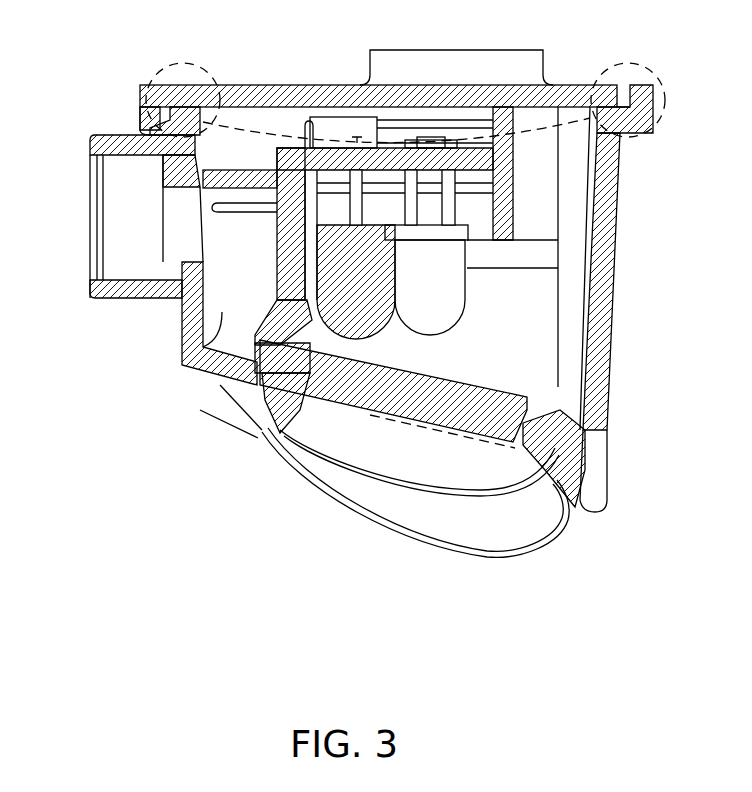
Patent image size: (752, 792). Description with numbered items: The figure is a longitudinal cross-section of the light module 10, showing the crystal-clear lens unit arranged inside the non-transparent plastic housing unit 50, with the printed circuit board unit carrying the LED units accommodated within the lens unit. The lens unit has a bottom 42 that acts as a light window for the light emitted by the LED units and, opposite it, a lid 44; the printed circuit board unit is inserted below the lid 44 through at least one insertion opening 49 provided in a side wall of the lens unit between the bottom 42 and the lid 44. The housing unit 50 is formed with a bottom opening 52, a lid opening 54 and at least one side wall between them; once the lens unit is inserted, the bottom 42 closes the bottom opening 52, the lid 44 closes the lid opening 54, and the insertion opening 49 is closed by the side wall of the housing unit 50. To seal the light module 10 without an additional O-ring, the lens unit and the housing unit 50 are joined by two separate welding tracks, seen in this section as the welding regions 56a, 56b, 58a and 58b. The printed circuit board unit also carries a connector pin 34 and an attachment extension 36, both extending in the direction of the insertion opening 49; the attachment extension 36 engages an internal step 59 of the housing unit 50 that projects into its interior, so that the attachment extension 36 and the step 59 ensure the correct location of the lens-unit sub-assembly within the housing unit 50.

The light module 10 is at (100, 143).
The connector pin 34 is at (218, 210).
The attachment extension 36 is at (203, 178).
The bottom 42 is at (412, 420).
The lid 44 is at (408, 86).
The insertion opening 49 is at (182, 372).
The housing unit 50 is at (172, 292).
The bottom opening 52 is at (475, 490).
The lid opening 54 is at (277, 120).
The welding region 56a is at (262, 428).
The welding region 56b is at (592, 442).
The welding region 58a is at (163, 100).
The welding region 58b is at (623, 78).
The internal step 59 is at (160, 133).